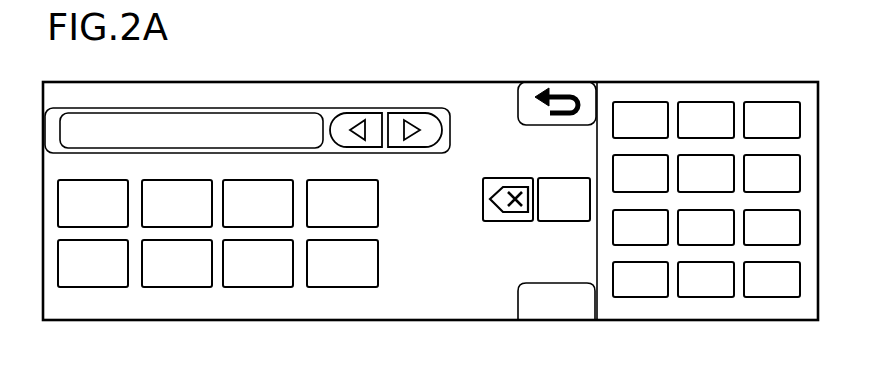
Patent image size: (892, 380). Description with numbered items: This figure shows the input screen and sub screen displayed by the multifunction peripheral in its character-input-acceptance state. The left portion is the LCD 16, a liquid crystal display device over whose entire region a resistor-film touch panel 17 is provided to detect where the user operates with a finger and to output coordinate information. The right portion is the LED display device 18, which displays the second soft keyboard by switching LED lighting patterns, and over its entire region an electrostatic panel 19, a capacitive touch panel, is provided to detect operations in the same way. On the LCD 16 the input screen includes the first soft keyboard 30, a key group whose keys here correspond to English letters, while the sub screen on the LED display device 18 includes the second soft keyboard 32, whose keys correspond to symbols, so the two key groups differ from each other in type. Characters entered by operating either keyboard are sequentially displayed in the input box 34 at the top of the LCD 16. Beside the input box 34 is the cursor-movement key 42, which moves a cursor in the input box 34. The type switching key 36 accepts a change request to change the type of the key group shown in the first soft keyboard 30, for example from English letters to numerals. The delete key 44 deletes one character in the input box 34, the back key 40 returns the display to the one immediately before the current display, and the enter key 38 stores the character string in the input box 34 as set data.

The LCD 16 is at (320, 204).
The touch panel 17 is at (320, 204).
The LED display device 18 is at (707, 201).
The electrostatic panel 19 is at (707, 201).
The first soft keyboard 30 is at (378, 301).
The second soft keyboard 32 is at (802, 300).
The input box 34 is at (310, 138).
The type switching key 36 is at (565, 221).
The enter key 38 is at (540, 320).
The back key 40 is at (538, 125).
The cursor-movement key 42 is at (400, 147).
The delete key 44 is at (496, 221).